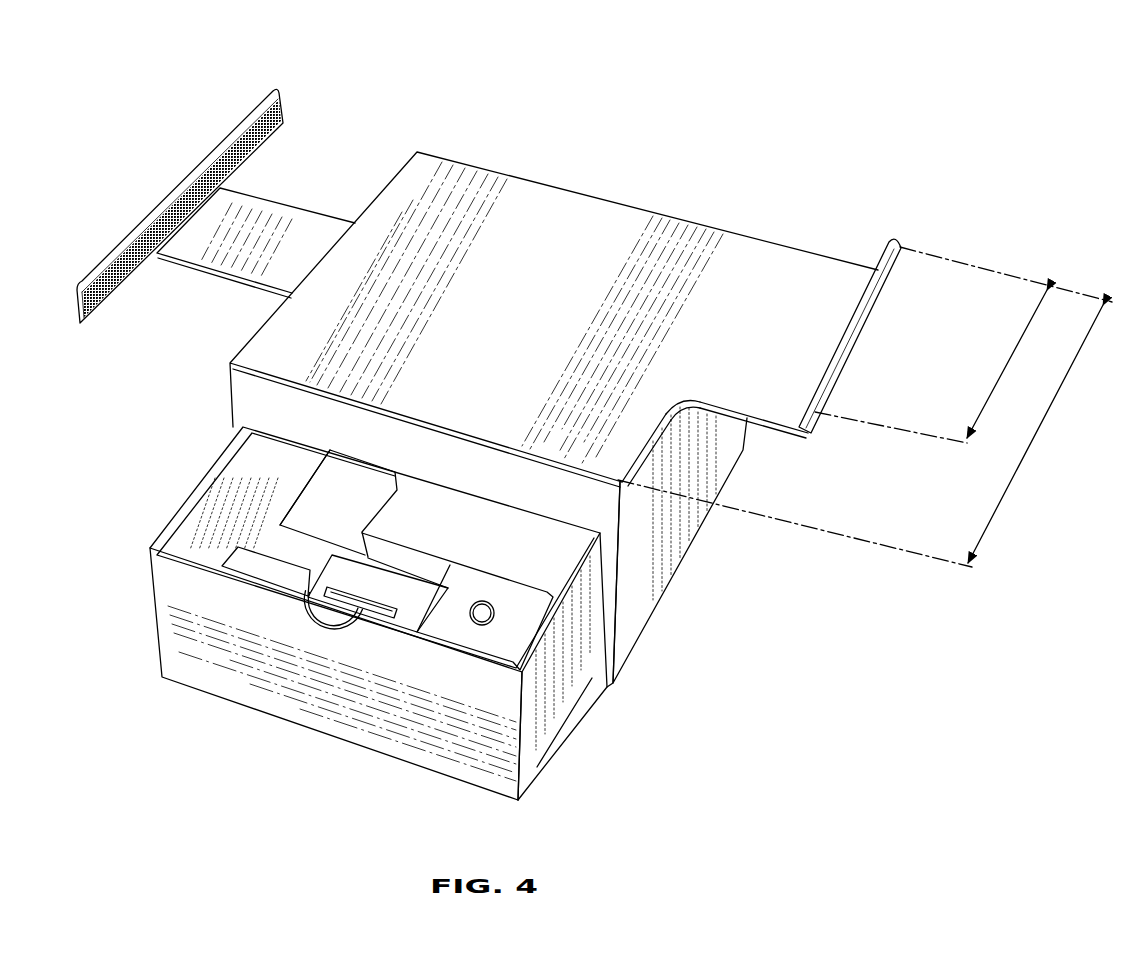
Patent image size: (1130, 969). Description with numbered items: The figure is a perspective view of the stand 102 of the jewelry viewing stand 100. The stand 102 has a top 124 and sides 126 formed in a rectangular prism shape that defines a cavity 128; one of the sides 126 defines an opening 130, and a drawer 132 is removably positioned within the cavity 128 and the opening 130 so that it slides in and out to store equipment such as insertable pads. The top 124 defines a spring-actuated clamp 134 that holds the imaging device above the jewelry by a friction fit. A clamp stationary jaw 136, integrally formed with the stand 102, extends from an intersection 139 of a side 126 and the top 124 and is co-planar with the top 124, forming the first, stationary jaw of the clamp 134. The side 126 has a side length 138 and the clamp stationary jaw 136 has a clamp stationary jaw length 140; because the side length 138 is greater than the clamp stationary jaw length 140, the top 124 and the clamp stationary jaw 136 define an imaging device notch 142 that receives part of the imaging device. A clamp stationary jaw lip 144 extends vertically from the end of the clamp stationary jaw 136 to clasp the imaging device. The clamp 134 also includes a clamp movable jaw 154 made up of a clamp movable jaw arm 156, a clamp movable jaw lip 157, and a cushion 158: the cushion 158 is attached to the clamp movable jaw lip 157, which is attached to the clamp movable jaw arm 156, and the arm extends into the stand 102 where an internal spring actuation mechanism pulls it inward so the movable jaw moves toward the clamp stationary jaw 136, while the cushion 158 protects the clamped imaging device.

The jewelry viewing stand 100 is at (835, 110).
The stand 102 is at (232, 376).
The top 124 is at (450, 160).
The sides 126 is at (705, 452).
The cavity 128 is at (683, 537).
The opening 130 is at (603, 633).
The drawer 132 is at (527, 717).
The clamp 134 is at (840, 343).
The clamp stationary jaw 136 is at (875, 277).
The side length 138 is at (1020, 470).
The intersection 139 is at (688, 400).
The clamp stationary jaw length 140 is at (1010, 353).
The imaging device notch 142 is at (658, 427).
The clamp stationary jaw lip 144 is at (853, 313).
The clamp movable jaw 154 is at (217, 148).
The clamp movable jaw arm 156 is at (242, 250).
The clamp movable jaw lip 157 is at (114, 248).
The cushion 158 is at (158, 197).